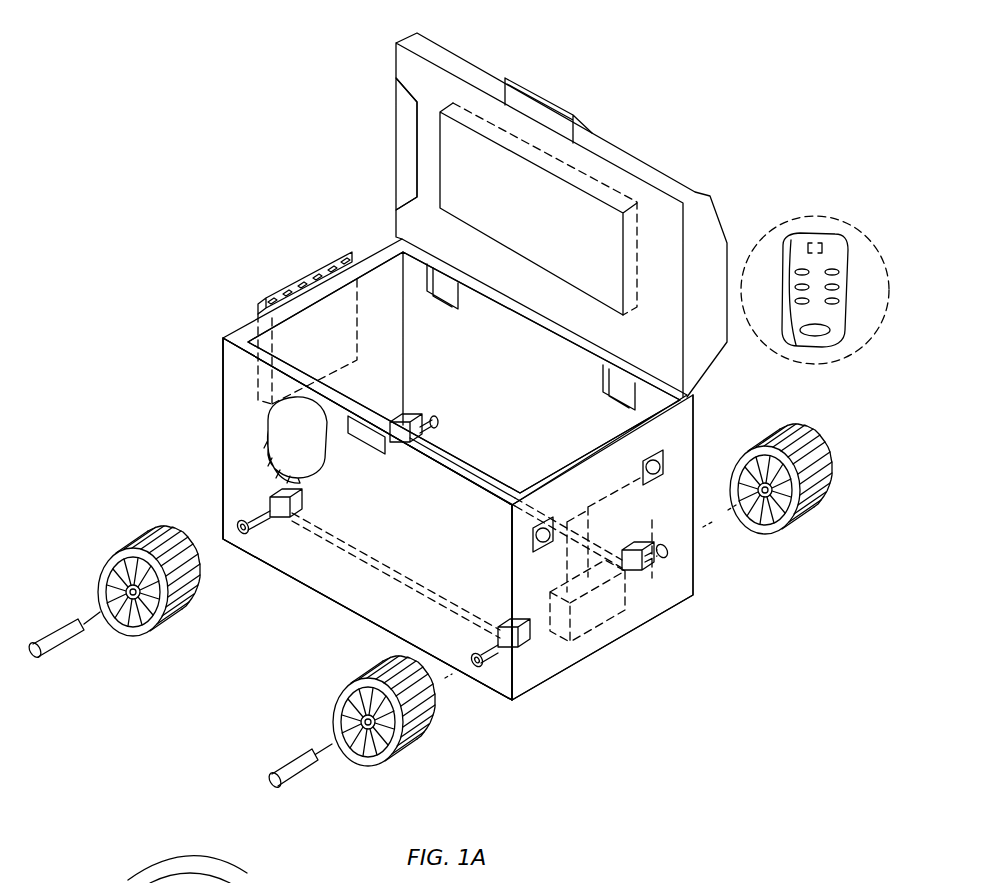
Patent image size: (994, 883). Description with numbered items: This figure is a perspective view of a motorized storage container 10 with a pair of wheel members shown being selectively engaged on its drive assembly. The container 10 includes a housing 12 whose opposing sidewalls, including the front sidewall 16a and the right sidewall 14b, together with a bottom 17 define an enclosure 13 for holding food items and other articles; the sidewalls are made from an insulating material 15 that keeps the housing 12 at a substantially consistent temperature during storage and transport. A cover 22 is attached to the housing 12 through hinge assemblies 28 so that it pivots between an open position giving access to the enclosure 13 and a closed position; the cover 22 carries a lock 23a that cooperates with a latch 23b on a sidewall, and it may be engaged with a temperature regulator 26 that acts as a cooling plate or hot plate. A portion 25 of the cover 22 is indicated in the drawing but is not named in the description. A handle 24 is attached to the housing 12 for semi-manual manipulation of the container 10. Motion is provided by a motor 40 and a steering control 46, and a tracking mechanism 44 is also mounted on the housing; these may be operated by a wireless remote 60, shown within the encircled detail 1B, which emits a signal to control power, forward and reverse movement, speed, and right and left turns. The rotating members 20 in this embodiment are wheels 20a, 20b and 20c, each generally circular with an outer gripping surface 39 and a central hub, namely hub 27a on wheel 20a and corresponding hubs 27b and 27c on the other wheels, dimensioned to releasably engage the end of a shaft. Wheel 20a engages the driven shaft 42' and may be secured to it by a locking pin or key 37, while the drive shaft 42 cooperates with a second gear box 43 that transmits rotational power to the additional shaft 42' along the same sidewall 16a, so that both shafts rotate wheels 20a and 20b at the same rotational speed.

The container 10 is at (262, 186).
The housing 12 is at (212, 353).
The enclosure 13 is at (384, 316).
The sidewall 14b is at (535, 677).
The insulating material 15 is at (266, 441).
The sidewall 16a is at (347, 593).
The bottom 17 is at (420, 546).
The rotating members 20 is at (108, 538).
The wheel 20a is at (173, 578).
The wheel 20b is at (418, 723).
The wheel 20c is at (793, 509).
The cover 22 is at (675, 170).
The lock 23a is at (541, 107).
The latch 23b is at (366, 440).
The handle 24 is at (278, 290).
The lid rim 25 is at (404, 132).
The temperature regulator 26 is at (463, 145).
The hub 27a is at (130, 606).
The wheel hub 27b is at (368, 748).
The wheel hub 27c is at (768, 502).
The hinge assemblies 28 is at (440, 297).
The locking pin or key 37 is at (58, 633).
The outer gripping surface 39 is at (145, 537).
The motor 40 is at (613, 617).
The drive shaft 42 is at (396, 591).
The driven shaft 42' is at (216, 501).
The second gear box 43 is at (398, 420).
The tracking mechanism 44 is at (668, 463).
The steering control 46 is at (558, 516).
The detail view circle 1B is at (813, 214).
The wireless remote 60 is at (833, 248).